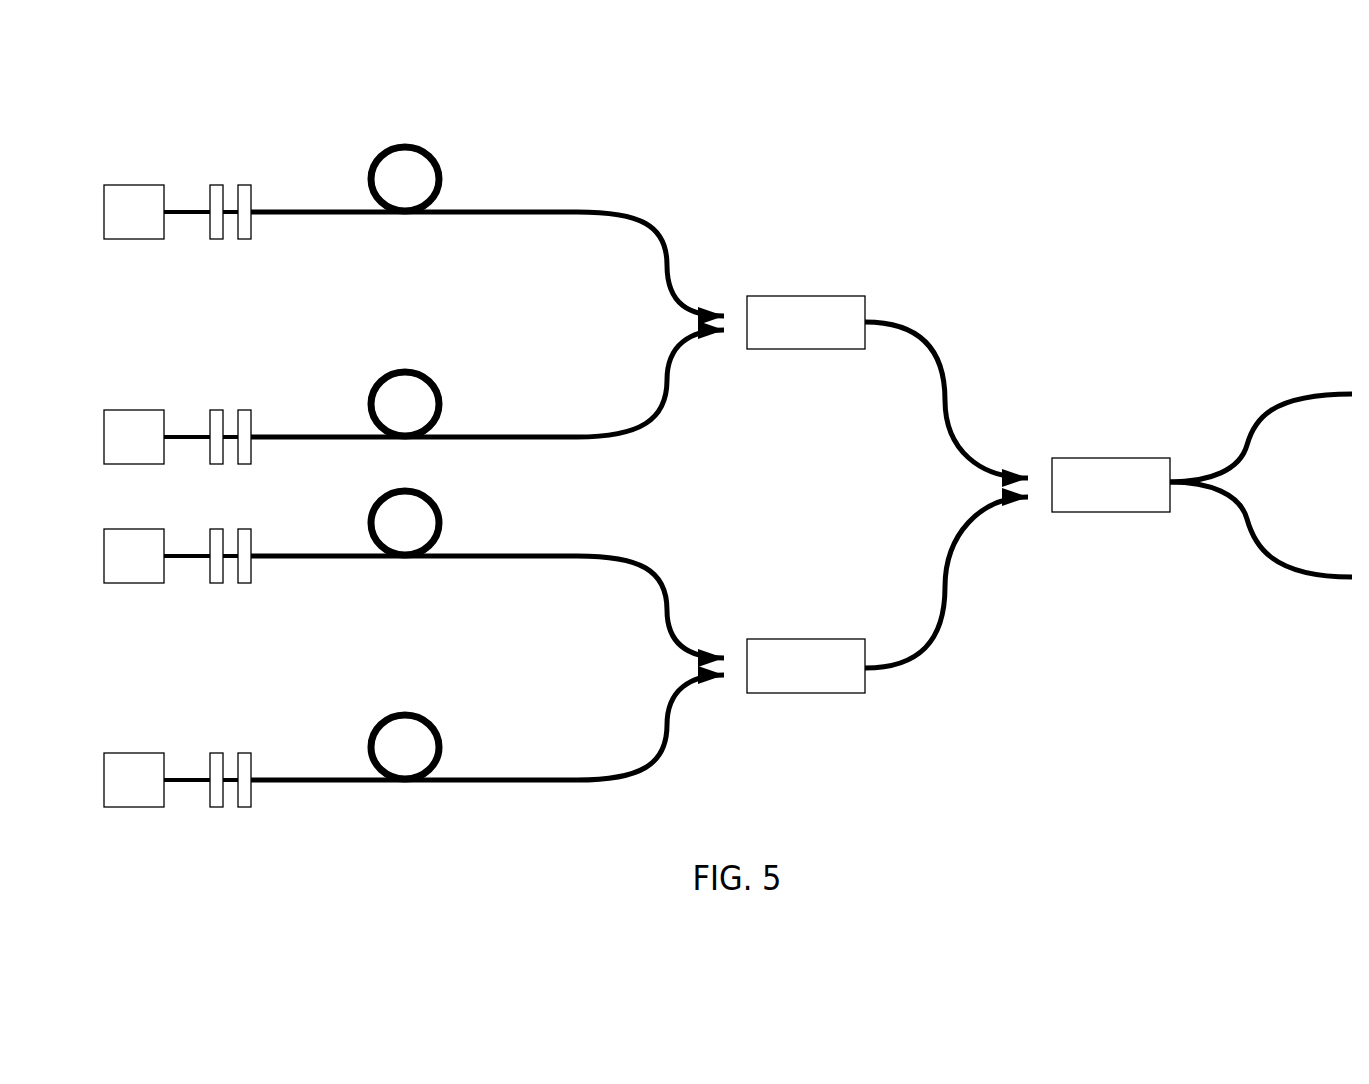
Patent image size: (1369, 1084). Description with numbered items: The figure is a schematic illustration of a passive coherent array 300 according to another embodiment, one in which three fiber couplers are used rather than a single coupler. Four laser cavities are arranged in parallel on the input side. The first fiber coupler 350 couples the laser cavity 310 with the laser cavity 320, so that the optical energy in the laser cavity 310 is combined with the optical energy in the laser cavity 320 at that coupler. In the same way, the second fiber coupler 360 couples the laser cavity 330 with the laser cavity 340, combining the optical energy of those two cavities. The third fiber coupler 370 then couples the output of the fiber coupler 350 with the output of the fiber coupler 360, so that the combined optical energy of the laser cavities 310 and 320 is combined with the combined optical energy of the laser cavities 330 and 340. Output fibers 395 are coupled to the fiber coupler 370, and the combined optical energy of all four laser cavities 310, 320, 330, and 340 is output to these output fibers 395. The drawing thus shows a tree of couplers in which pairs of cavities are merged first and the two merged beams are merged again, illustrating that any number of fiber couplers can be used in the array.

The passive coherent array 300 is at (151, 96).
The laser cavity 310 is at (607, 176).
The laser cavity 320 is at (295, 390).
The laser cavity 330 is at (314, 584).
The laser cavity 340 is at (314, 817).
The fiber coupler 350 is at (788, 311).
The fiber coupler 360 is at (798, 663).
The fiber coupler 370 is at (1110, 478).
The output fibers 395 is at (1287, 402).